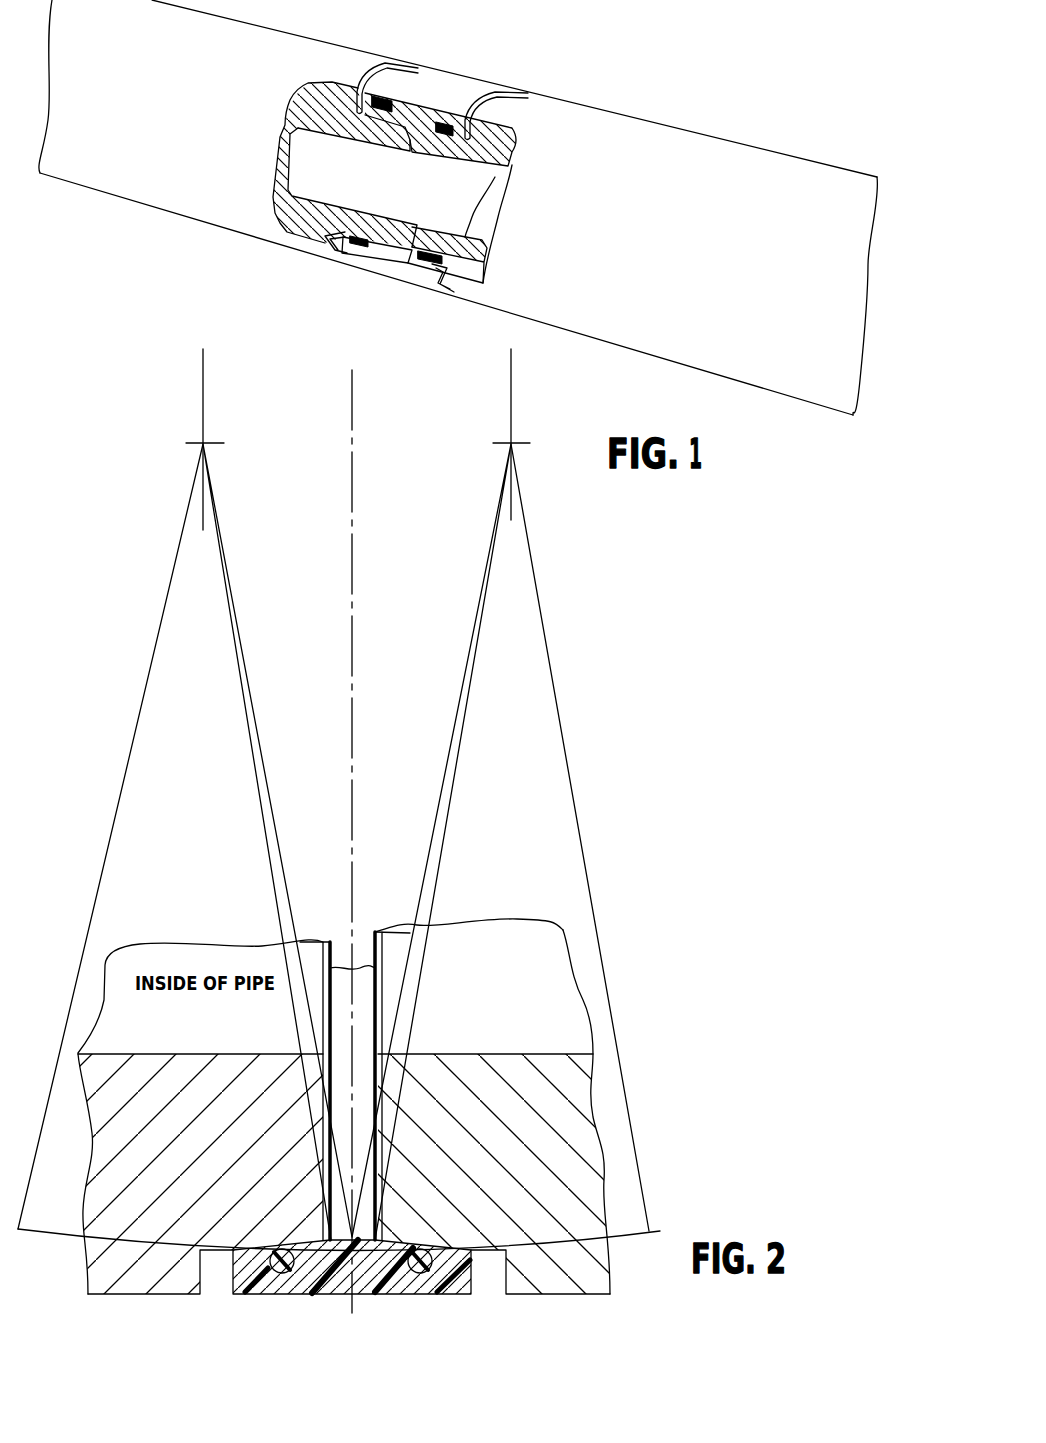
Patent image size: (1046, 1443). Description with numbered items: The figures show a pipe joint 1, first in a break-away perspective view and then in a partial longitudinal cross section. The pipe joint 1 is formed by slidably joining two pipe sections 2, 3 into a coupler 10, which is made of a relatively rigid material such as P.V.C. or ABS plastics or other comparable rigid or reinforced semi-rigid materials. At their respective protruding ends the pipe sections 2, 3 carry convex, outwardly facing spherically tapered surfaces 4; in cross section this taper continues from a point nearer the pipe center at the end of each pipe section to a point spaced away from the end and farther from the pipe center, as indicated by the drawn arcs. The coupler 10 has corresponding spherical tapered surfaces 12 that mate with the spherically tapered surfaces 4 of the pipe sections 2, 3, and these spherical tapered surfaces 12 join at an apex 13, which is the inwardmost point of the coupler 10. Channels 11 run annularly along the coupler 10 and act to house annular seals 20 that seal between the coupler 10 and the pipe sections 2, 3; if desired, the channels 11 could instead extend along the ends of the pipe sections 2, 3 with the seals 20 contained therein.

In FIG. 1, the pipe joint 1 is at (567, 82).
In FIG. 1, the pipe section 2 is at (307, 52).
In FIG. 2, the pipe section 2 is at (175, 1067).
In FIG. 1, the pipe section 3 is at (670, 140).
In FIG. 2, the pipe section 3 is at (512, 1067).
In FIG. 2, the spherically tapered surface 4 is at (269, 1250).
In FIG. 1, the coupler 10 is at (450, 80).
In FIG. 2, the coupler 10 is at (290, 1292).
In FIG. 2, the channel 11 is at (235, 1293).
In FIG. 2, the spherical tapered surface 12 is at (392, 1250).
In FIG. 2, the apex 13 is at (354, 1232).
In FIG. 2, the annular seal 20 is at (317, 1293).